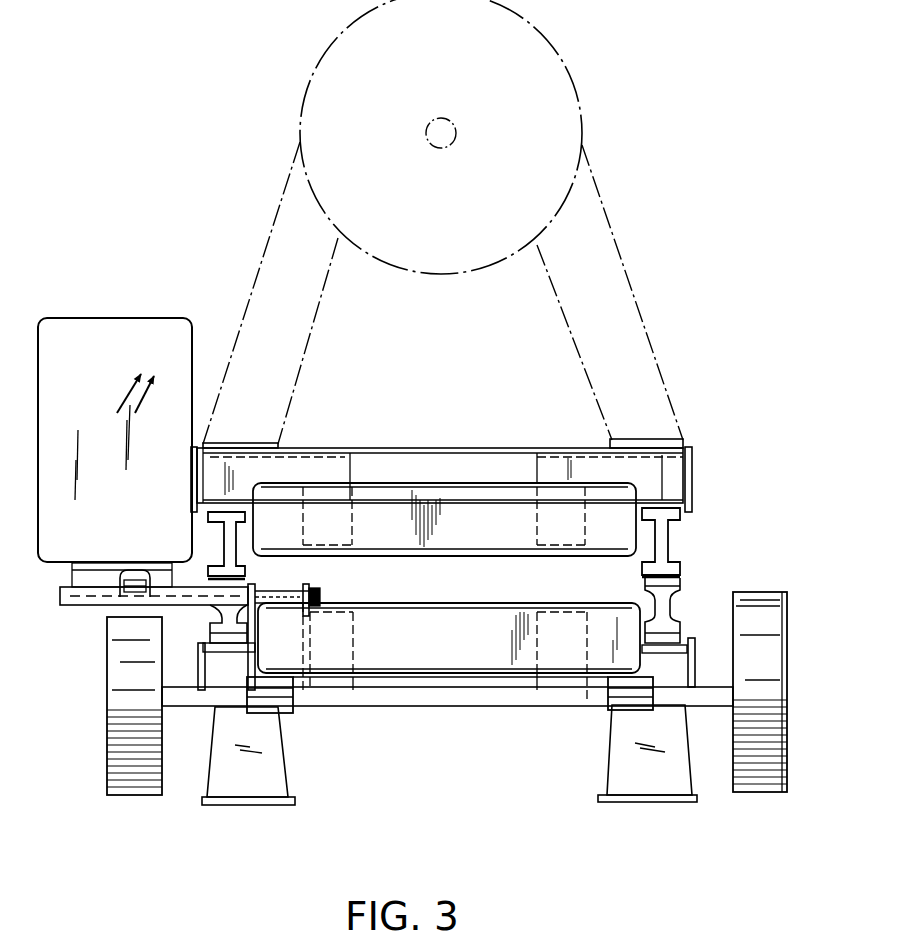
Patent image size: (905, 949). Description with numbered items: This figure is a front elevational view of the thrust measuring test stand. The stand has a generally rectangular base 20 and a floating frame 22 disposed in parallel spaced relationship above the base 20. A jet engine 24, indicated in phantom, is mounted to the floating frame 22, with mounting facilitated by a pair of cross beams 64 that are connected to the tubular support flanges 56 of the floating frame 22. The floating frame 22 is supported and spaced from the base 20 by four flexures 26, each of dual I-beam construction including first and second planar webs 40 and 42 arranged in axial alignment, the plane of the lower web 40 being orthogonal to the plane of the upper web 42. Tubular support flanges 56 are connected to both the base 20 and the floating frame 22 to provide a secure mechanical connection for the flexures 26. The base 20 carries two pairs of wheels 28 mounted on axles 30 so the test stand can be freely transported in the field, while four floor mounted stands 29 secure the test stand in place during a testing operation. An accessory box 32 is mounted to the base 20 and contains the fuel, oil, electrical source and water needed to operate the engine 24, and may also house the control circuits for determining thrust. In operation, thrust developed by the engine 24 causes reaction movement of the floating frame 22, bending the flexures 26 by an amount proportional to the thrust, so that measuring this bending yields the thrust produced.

The base 20 is at (430, 676).
The floating frame 22 is at (478, 558).
The jet engine 24 is at (560, 56).
The flexure 26 is at (259, 575).
The wheels 28 is at (112, 725).
The floor mounted stands 29 is at (233, 787).
The axles 30 is at (188, 702).
The accessory box 32 is at (68, 325).
The first planar web 40 is at (212, 621).
The second planar web 42 is at (222, 542).
The tubular support flanges 56 is at (192, 463).
The cross beams 64 is at (412, 434).